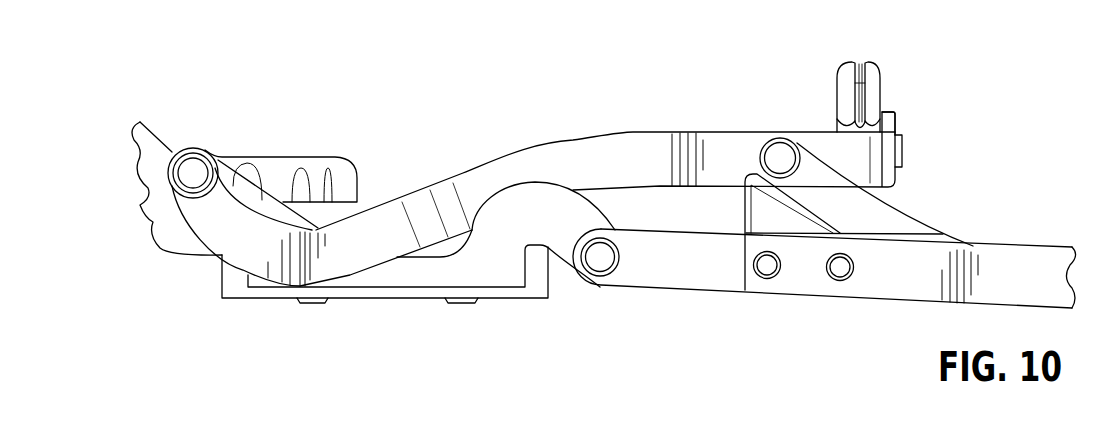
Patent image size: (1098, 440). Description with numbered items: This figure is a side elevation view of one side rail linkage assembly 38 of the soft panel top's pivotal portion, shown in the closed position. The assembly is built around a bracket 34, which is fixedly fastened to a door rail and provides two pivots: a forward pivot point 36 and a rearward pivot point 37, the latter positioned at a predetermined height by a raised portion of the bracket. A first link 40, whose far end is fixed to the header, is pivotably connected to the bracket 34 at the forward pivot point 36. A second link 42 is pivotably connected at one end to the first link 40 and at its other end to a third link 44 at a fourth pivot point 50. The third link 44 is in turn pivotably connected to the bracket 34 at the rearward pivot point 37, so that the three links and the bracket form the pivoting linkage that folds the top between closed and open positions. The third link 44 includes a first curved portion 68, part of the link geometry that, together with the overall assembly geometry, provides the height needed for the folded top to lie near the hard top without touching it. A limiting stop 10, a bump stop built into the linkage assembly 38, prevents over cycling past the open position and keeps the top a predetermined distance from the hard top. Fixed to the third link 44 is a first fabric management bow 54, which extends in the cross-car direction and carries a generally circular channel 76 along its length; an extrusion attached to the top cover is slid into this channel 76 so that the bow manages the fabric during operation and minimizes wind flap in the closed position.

The limiting stop 10 is at (763, 213).
The bracket 34 is at (487, 275).
The forward pivot point 36 is at (600, 258).
The rearward pivot point 37 is at (193, 175).
The side rail linkage assembly 38 is at (646, 84).
The first link 40 is at (900, 275).
The second link 42 is at (885, 222).
The third link 44 is at (588, 165).
The fourth pivot point 50 is at (784, 160).
The first fabric management bow 54 is at (872, 95).
The first curved portion 68 is at (294, 298).
The channel 76 is at (868, 134).